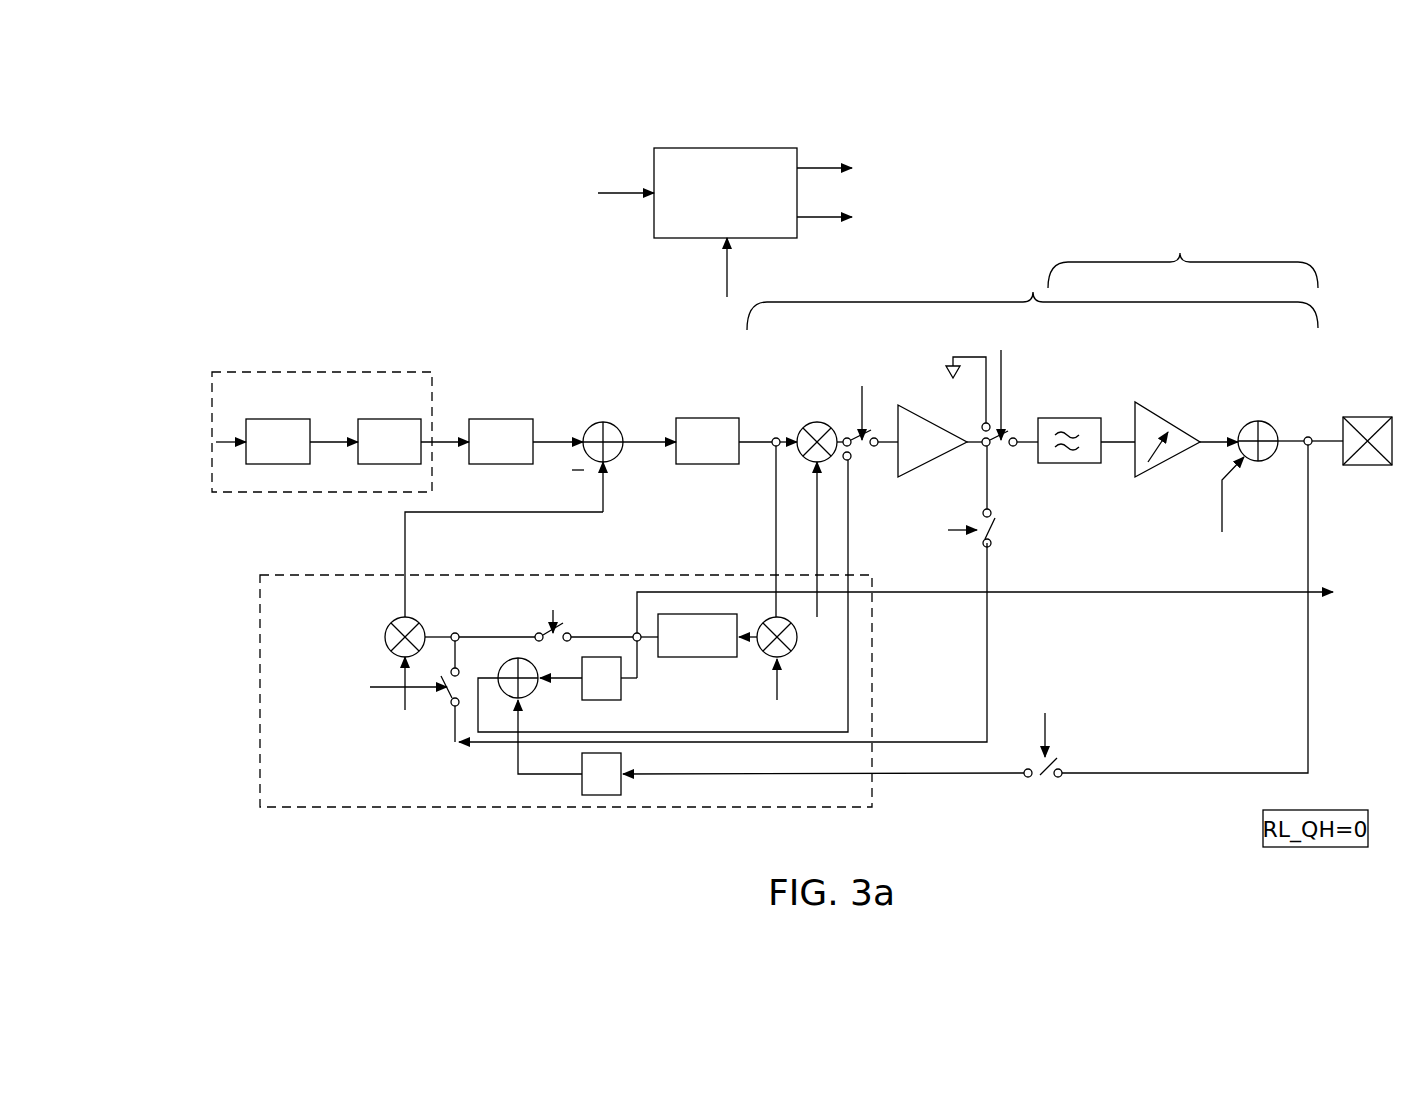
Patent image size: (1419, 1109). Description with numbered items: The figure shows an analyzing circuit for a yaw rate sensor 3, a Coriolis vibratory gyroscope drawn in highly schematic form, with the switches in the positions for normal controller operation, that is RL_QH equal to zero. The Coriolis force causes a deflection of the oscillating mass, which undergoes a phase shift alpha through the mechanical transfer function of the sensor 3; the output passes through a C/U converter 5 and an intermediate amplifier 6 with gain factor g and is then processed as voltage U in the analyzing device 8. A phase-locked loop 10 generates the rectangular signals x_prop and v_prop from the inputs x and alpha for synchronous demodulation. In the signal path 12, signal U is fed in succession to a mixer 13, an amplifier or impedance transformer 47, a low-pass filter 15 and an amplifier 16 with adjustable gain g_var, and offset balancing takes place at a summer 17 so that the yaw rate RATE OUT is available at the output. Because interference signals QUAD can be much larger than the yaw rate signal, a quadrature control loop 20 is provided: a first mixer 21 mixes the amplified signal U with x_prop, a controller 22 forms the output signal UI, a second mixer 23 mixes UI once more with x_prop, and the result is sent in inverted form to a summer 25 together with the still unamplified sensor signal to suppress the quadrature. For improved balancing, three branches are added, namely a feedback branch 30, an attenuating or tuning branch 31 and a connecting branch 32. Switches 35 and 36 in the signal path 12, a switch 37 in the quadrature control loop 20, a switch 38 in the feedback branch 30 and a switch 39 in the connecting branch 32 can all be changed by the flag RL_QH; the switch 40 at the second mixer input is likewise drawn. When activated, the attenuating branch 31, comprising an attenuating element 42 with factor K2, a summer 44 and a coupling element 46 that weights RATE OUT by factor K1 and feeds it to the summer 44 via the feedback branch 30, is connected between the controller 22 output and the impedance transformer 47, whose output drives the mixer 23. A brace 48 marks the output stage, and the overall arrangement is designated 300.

The yaw rate sensor 3 is at (310, 403).
The C/U converter 5 is at (490, 419).
The intermediate amplifier 6 is at (695, 418).
The analyzing device 8 is at (1032, 299).
The phase-locked loop 10 is at (657, 162).
The signal path 12 is at (766, 414).
The mixer 13 is at (812, 421).
The low-pass filter 15 is at (1085, 418).
The amplifier 16 is at (1138, 417).
The summer 17 is at (1266, 428).
The quadrature control loop 20 is at (281, 745).
The first mixer 21 is at (760, 650).
The controller 22 is at (688, 652).
The second mixer 23 is at (385, 632).
The summer 25 is at (603, 422).
The feedback branch 30 is at (1140, 776).
The attenuating branch 31 is at (640, 714).
The connecting branch 32 is at (938, 744).
The switch 35 is at (875, 438).
The switch 36 is at (1015, 438).
The switch 37 is at (540, 628).
The switch 38 is at (1048, 778).
The switch 39 is at (996, 532).
The switch 40 is at (447, 697).
The attenuating element 42 is at (585, 698).
The summer 44 is at (510, 690).
The coupling element 46 is at (600, 797).
The impedance transformer 47 is at (925, 458).
The output stage 48 is at (1183, 257).
The control circuit 300 is at (1264, 222).